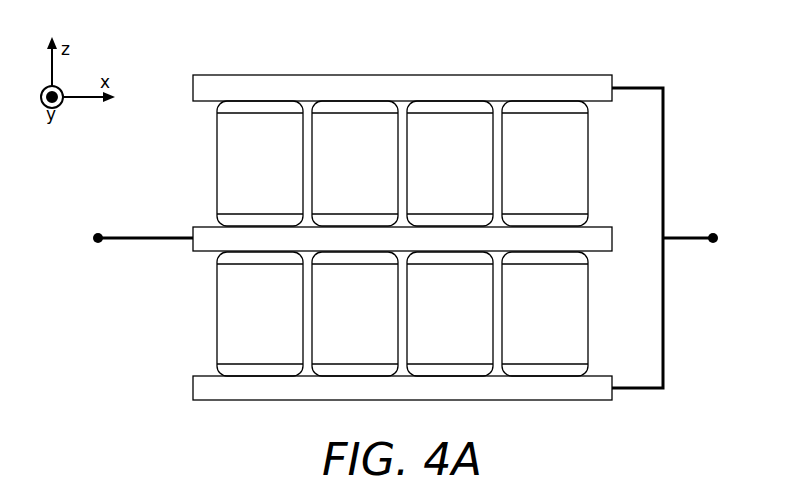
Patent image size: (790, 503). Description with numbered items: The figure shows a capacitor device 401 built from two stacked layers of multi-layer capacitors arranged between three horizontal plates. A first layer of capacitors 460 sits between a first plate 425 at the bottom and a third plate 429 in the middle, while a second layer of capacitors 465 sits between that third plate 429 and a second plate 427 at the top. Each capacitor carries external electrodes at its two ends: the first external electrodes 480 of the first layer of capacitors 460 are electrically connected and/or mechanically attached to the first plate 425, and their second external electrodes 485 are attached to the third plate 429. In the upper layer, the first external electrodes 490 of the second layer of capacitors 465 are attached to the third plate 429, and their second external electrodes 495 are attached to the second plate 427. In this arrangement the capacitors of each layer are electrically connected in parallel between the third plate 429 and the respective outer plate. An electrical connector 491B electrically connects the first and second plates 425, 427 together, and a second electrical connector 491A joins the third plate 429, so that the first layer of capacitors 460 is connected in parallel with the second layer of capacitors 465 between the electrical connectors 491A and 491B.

The capacitor device 401 is at (592, 48).
The second plate 427 is at (193, 88).
The third plate 429 is at (193, 229).
The first plate 425 is at (193, 389).
The second layer of capacitors 465 is at (397, 163).
The first layer of capacitors 460 is at (398, 314).
The second external electrodes of the second layer of capacitors 495 is at (218, 105).
The first external electrodes of the second layer of capacitors 490 is at (217, 225).
The second external electrodes of the first layer of capacitors 485 is at (217, 255).
The first external electrodes of the first layer of capacitors 480 is at (217, 375).
The electrical connector 491A is at (98, 244).
The electrical connector 491B is at (664, 197).